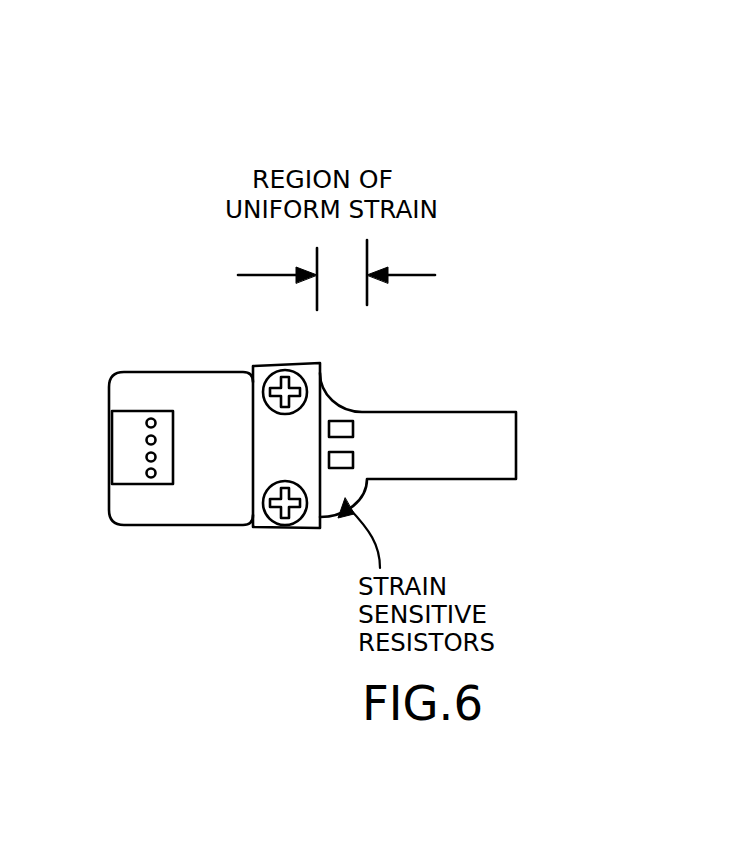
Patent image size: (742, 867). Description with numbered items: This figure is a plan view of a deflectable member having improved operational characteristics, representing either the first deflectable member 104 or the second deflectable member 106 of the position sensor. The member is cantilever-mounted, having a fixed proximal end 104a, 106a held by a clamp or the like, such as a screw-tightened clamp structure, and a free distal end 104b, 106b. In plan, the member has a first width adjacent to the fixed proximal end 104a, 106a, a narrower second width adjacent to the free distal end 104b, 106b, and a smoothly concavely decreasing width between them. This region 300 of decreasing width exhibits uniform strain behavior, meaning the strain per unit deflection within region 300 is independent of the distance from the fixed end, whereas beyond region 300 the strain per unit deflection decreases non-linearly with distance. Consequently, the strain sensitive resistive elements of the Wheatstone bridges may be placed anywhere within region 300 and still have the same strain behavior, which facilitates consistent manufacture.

The first deflectable member 104 is at (503, 413).
The second deflectable member 106 is at (536, 404).
The fixed proximal end 104a is at (477, 336).
The fixed proximal end 106a is at (337, 403).
The free distal end 104b is at (585, 473).
The free distal end 106b is at (505, 465).
The region of decreasing width 300 is at (260, 277).